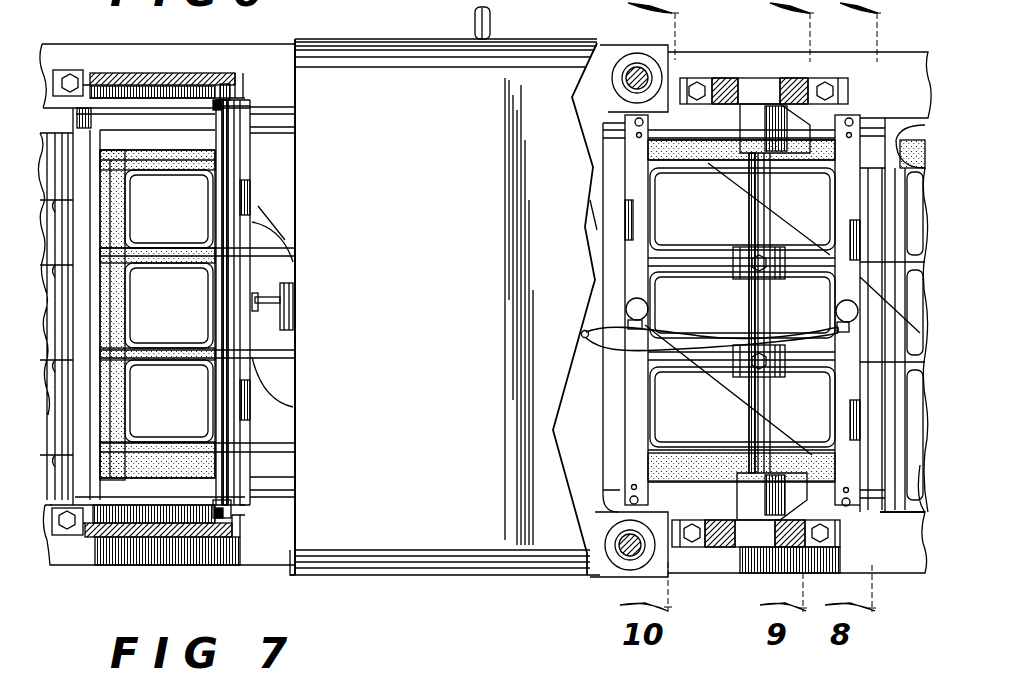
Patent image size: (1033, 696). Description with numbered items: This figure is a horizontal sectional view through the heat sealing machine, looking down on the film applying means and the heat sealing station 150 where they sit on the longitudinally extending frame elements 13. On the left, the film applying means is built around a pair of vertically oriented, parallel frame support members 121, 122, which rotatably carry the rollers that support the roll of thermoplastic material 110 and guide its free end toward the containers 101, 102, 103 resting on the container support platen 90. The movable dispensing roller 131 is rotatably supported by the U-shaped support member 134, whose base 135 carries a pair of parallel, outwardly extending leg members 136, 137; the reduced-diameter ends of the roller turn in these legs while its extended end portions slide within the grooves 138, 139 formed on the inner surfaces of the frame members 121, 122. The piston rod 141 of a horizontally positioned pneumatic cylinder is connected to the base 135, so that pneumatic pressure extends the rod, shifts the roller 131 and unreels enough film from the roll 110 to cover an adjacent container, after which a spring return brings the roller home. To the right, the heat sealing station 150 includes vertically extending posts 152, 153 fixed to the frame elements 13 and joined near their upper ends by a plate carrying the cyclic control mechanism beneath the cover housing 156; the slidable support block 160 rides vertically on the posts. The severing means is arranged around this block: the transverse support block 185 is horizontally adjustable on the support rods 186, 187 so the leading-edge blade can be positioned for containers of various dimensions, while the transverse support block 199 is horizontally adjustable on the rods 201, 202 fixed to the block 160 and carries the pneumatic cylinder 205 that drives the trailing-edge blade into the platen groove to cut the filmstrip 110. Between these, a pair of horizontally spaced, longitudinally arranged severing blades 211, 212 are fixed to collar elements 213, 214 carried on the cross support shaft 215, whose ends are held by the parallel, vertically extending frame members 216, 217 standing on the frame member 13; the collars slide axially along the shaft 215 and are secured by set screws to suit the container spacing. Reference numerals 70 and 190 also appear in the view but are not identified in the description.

The longitudinally extending frame element 13 is at (160, 60).
The bolt 70 is at (106, 119).
The container support platen 90 is at (193, 159).
The container 101 is at (152, 229).
The container 102 is at (156, 319).
The container 103 is at (156, 410).
The roll of thermoplastic material 110 is at (216, 272).
The frame support member 121 is at (134, 72).
The frame support member 122 is at (123, 532).
The movable dispensing roller 131 is at (222, 198).
The U-shaped support member 134 is at (261, 129).
The base 135 is at (255, 211).
The leg member 136 is at (216, 110).
The leg member 137 is at (228, 504).
The groove 138 is at (176, 90).
The groove 139 is at (176, 517).
The piston rod 141 is at (282, 279).
The heat sealing station 150 is at (450, 560).
The post 152 is at (633, 68).
The post 153 is at (630, 557).
The cover housing 156 is at (427, 87).
The slidable support block 160 is at (596, 218).
The transverse support block 185 is at (847, 375).
The support rod 186 is at (836, 115).
The support rod 187 is at (830, 516).
The ball joint 190 is at (840, 306).
The transverse support block 199 is at (640, 233).
The rod 201 is at (617, 120).
The rod 202 is at (610, 484).
The pneumatic cylinder 205 is at (640, 307).
The severing blade 211 is at (787, 362).
The severing blade 212 is at (790, 258).
The collar element 213 is at (743, 376).
The collar element 214 is at (744, 255).
The cross support shaft 215 is at (765, 214).
The frame member 216 is at (747, 530).
The frame member 217 is at (770, 88).